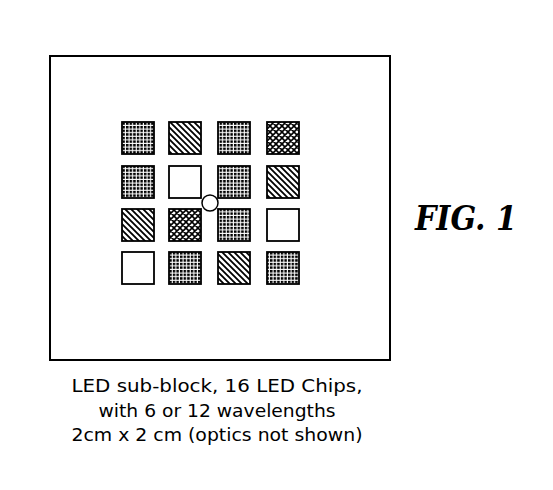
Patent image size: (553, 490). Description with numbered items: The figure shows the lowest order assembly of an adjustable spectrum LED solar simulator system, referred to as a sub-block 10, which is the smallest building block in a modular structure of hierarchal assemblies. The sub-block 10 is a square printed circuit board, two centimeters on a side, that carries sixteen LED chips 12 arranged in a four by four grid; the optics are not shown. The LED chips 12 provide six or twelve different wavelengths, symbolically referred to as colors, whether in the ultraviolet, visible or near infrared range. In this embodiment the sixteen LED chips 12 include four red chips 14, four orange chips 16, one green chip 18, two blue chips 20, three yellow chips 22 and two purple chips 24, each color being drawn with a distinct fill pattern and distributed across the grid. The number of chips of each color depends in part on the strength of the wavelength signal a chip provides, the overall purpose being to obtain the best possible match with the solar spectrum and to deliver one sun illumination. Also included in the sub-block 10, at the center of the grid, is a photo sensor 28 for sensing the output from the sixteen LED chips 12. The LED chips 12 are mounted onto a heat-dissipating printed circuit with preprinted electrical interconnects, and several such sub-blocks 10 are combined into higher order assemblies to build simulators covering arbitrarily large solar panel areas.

The sub-block 10 is at (397, 90).
The LED chips 12 is at (315, 62).
The red chips 14 is at (141, 122).
The orange chips 16 is at (183, 122).
The green chip 18 is at (233, 122).
The blue chips 20 is at (283, 122).
The yellow chips 22 is at (183, 172).
The purple chips 24 is at (124, 190).
The photo sensor 28 is at (210, 211).